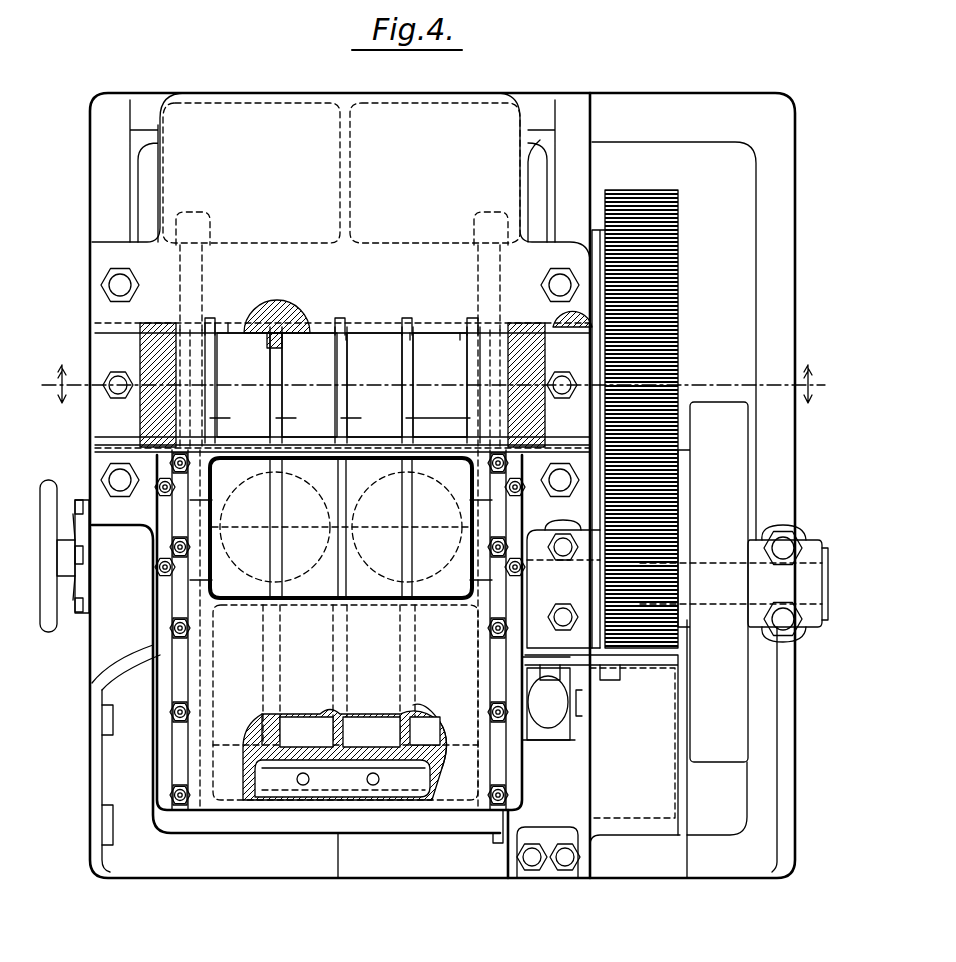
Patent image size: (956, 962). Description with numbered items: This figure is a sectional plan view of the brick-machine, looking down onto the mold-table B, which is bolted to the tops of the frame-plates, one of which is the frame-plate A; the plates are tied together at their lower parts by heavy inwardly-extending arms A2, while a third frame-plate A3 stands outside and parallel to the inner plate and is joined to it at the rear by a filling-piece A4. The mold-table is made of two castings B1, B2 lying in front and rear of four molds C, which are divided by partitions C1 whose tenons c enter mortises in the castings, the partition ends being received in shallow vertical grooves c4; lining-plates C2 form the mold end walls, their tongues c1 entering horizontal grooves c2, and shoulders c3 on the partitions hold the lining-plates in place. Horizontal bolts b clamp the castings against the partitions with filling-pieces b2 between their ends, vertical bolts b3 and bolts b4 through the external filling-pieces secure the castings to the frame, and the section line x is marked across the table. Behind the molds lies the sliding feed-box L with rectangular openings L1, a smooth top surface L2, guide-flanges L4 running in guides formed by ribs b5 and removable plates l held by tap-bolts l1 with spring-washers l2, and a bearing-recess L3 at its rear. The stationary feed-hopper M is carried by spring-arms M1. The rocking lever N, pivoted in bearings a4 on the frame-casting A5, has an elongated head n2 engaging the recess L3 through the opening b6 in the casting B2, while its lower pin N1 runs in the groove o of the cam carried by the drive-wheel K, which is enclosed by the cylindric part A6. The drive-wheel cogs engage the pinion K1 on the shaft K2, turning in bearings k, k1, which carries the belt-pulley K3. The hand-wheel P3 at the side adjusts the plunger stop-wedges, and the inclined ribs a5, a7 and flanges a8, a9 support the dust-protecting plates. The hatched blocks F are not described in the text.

The frame-plate A is at (92, 144).
The inclined flange a8 is at (140, 150).
The inclined flange a9 is at (545, 150).
The frame-base arm A2 is at (432, 515).
The third frame-plate A3 is at (787, 737).
The filling-piece A4 is at (598, 852).
The frame-casting A5 is at (590, 652).
The cylindric part A6 is at (611, 743).
The bearing a4 is at (582, 705).
The inclined rib a5 is at (495, 822).
The inclined rib a7 is at (100, 702).
The mold-table B is at (341, 263).
The front casting of mold-table B1 is at (341, 173).
The rear casting of mold-table B2 is at (430, 735).
The horizontal bolt b is at (185, 245).
The filling-piece b2 is at (343, 388).
The vertical bolt b3 is at (120, 283).
The bolt b4 is at (116, 383).
The vertical rib b5 is at (341, 630).
The recess or opening b6 is at (262, 726).
The hatched blocks F is at (140, 412).
The section line x is at (431, 384).
The vertical groove c4 is at (484, 322).
The tenon c is at (280, 325).
The horizontal rib or tongue c1 is at (342, 377).
The horizontal groove c2 is at (272, 318).
The shoulder c3 is at (226, 338).
The mold C is at (342, 385).
The partition C1 is at (340, 406).
The lining-plate C2 is at (348, 388).
The sliding feed-box L is at (339, 632).
The rectangular opening L1 is at (341, 528).
The guide-flange L4 is at (380, 445).
The smooth horizontal top surface L2 is at (345, 717).
The bearing-recess L3 is at (256, 808).
The removable plate l is at (337, 630).
The spring-washer l2 is at (176, 463).
The tap-bolt l1 is at (340, 628).
The feed-hopper M is at (341, 536).
The spring-arm M1 is at (341, 549).
The rocking lever N is at (376, 745).
The transversely-elongated head n2 is at (343, 779).
The pin N1 is at (550, 740).
The hand-wheel P3 is at (50, 500).
The drive-wheel K is at (656, 195).
The cam groove o is at (598, 245).
The pinion K1 is at (678, 592).
The belt-pulley K3 is at (719, 582).
The bearing k1 is at (731, 583).
The shaft K2 is at (838, 592).
The bearing k is at (563, 584).